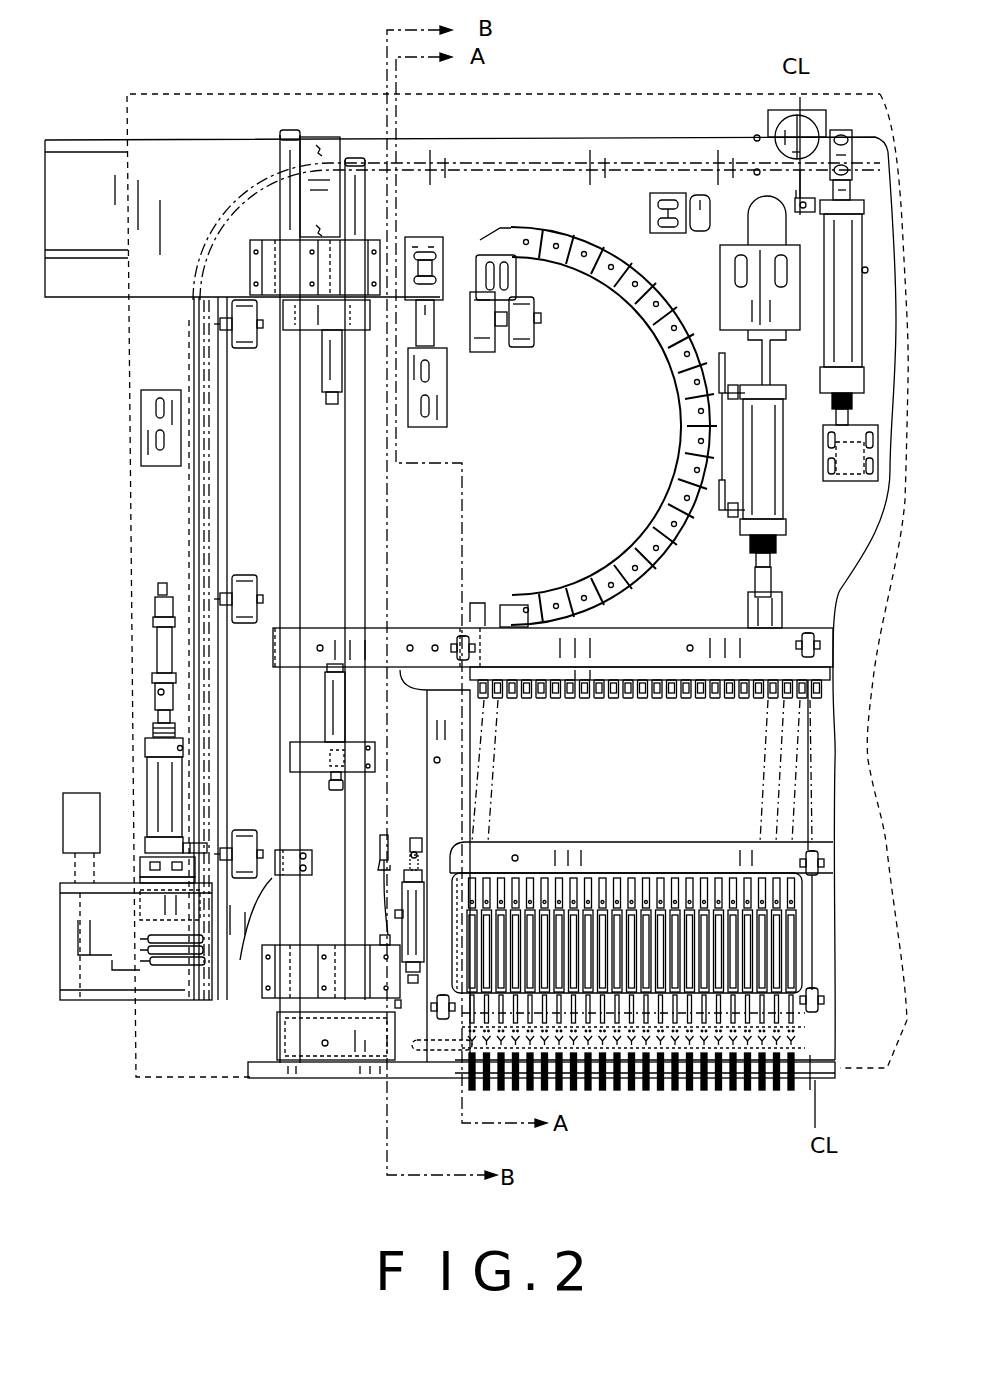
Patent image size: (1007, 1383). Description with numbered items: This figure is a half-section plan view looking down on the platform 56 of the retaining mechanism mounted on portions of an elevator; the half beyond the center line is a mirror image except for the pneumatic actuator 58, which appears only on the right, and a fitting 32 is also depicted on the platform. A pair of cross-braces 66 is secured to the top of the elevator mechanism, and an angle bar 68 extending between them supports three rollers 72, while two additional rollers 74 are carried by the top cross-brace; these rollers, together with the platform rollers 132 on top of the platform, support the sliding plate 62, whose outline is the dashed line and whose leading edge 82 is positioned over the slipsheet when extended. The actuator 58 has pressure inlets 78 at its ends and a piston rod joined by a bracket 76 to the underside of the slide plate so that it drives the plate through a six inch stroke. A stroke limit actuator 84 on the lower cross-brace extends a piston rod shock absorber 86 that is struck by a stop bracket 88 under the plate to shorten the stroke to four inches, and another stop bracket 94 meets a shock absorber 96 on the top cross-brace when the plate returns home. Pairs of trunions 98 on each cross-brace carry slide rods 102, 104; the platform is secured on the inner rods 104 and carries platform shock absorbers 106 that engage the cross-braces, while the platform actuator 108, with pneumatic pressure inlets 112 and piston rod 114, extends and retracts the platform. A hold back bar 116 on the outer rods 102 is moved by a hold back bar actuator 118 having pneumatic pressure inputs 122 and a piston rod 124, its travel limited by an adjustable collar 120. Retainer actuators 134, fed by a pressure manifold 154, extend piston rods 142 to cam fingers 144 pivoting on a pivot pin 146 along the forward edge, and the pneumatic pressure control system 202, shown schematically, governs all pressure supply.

The fitting 32 is at (465, 632).
The platform 56 is at (430, 628).
The pneumatic actuator 58 is at (847, 243).
The sliding plate 62 is at (137, 1043).
The cross-braces 66 is at (65, 185).
The angle bar 68 is at (200, 470).
The rollers 72 is at (248, 322).
The rollers 74 is at (700, 235).
The bracket 76 is at (865, 442).
The inlets 78 is at (810, 190).
The leading edge 82 is at (186, 1077).
The stroke limit actuator 84 is at (165, 775).
The piston rod shock absorber 86 is at (162, 583).
The stop bracket 88 is at (145, 420).
The stop bracket 94 is at (445, 415).
The shock absorber 96 is at (432, 322).
The trunions 98 is at (265, 240).
The slide rods 102 is at (345, 488).
The slide rods 104 is at (348, 520).
The platform shock absorbers 106 is at (332, 400).
The platform actuator 108 is at (760, 440).
The pneumatic pressure inlets 112 is at (690, 372).
The piston rod 114 is at (760, 600).
The hold back bar 116 is at (320, 1045).
The hold back bar actuator 118 is at (330, 846).
The collar 120 is at (272, 980).
The pneumatic pressure inputs 122 is at (412, 880).
The piston rod 124 is at (440, 1082).
The platform rollers 132 is at (812, 645).
The retainer actuators 134 is at (790, 938).
The piston rod 142 is at (782, 1085).
The cam finger 144 is at (792, 1088).
The pivot pin 146 is at (818, 1088).
The pressure manifold 154 is at (655, 672).
The pneumatic pressure control system 202 is at (80, 805).